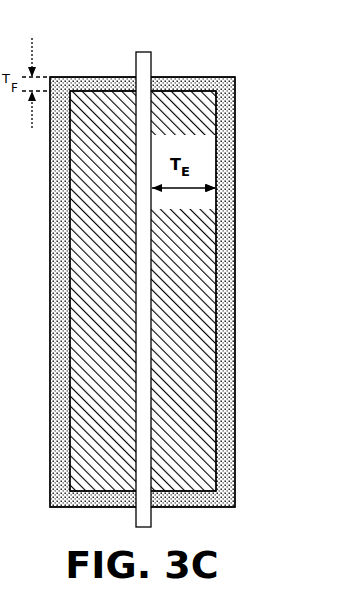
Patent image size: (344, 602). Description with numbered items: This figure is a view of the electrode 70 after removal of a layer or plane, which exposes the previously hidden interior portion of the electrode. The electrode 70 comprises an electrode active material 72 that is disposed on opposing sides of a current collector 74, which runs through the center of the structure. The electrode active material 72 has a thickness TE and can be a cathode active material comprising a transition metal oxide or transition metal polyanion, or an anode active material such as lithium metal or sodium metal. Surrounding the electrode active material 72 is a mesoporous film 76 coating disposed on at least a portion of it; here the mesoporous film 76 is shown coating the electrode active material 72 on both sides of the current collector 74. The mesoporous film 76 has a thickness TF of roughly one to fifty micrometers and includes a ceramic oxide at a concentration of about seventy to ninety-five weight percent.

The electrode 70 is at (203, 70).
The electrode active material 72 is at (82, 452).
The current collector 74 is at (141, 72).
The mesoporous film 76 is at (60, 298).